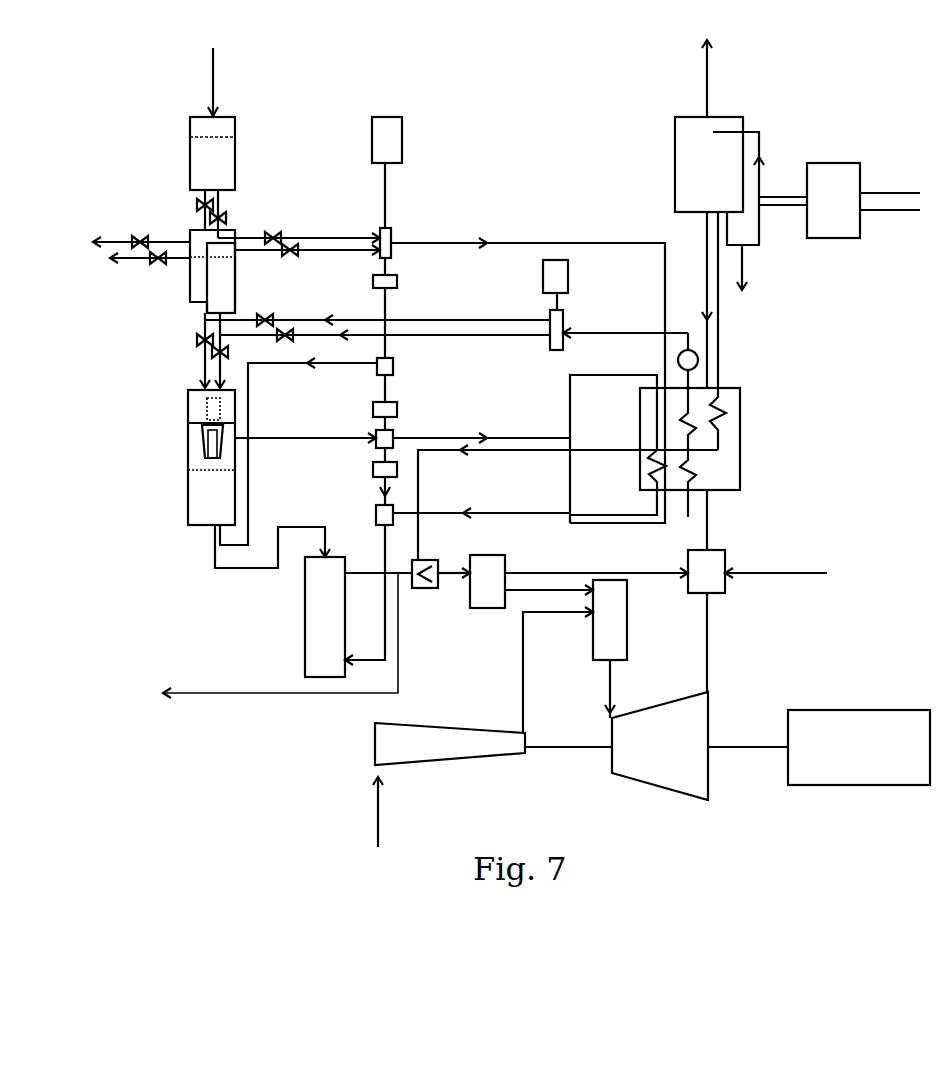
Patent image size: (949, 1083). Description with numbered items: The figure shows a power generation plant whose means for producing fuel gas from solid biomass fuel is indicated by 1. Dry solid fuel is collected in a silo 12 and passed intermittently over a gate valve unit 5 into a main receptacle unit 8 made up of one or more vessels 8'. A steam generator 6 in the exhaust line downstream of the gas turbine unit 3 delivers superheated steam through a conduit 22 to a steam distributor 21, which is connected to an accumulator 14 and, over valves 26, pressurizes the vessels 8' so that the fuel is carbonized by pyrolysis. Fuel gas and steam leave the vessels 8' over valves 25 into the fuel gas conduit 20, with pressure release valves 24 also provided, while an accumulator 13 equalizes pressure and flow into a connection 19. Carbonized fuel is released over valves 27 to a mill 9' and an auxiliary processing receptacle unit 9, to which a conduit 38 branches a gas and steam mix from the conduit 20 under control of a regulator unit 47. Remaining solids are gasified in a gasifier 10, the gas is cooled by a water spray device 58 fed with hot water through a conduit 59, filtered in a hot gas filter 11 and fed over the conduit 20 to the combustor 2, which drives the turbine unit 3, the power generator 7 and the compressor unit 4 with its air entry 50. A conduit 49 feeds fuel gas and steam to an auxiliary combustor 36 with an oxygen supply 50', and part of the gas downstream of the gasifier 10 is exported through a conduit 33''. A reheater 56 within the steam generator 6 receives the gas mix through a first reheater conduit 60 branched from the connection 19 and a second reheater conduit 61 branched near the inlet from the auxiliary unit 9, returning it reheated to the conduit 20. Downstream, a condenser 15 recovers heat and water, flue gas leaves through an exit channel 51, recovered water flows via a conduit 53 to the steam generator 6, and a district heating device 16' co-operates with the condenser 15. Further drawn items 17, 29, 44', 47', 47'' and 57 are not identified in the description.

The means for the production of fuel gas from solid fuel 1 is at (102, 573).
The combustor 2 is at (628, 639).
The gas turbine unit 3 is at (660, 787).
The compressor unit 4 is at (437, 765).
The gate valve unit 5 is at (178, 197).
The steam generator 6 is at (742, 443).
The power generator 7 is at (855, 787).
The main receptacle unit 8 is at (82, 297).
The vessel 8' is at (187, 272).
The auxiliary processing receptacle unit 9 is at (195, 462).
The mill 9' is at (189, 429).
The gasifier 10 is at (305, 622).
The hot gas filter 11 is at (488, 610).
The silo 12 is at (190, 137).
The accumulator 13 is at (403, 150).
The accumulator 14 is at (543, 280).
The condenser 15 is at (675, 165).
The district heating device 16' is at (863, 229).
The feed line 17 is at (323, 242).
The connection 19 is at (391, 230).
The fuel gas conduit 20 is at (388, 312).
The steam distributor 21 is at (564, 320).
The conduit 22 is at (626, 330).
The pressure release valve 24 is at (142, 237).
The valve 25 is at (290, 244).
The valve 26 is at (287, 329).
The valve 27 is at (213, 351).
The line 29 is at (281, 441).
The conduit 33'' is at (280, 664).
The auxiliary combustor 36 is at (721, 597).
The conduit 38 is at (250, 396).
The fuel feed line 44' is at (185, 82).
The regulator unit 47 is at (408, 399).
The pump 47' is at (362, 275).
The pump 47'' is at (356, 475).
The conduit 49 is at (592, 572).
The air entry 50 is at (354, 812).
The oxygen supply 50' is at (776, 554).
The flue gas exit channel 51 is at (711, 100).
The conduit 53 is at (720, 353).
The reheater 56 is at (655, 450).
The heat exchange coil 57 is at (645, 460).
The water spray device 58 is at (422, 593).
The conduit 59 is at (513, 455).
The first reheater conduit 60 is at (549, 240).
The second reheater conduit 61 is at (467, 436).